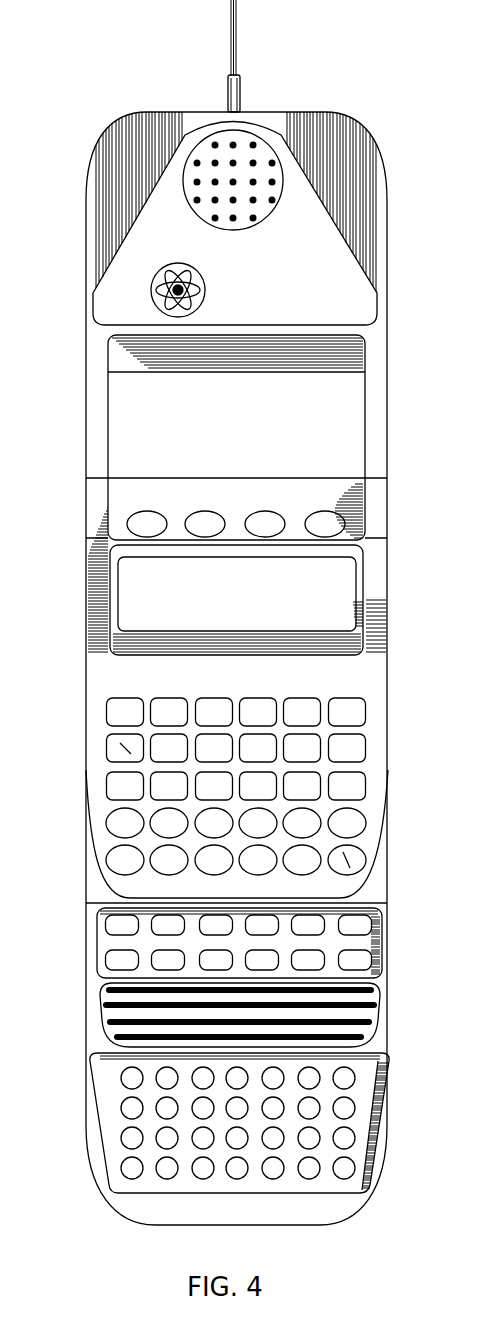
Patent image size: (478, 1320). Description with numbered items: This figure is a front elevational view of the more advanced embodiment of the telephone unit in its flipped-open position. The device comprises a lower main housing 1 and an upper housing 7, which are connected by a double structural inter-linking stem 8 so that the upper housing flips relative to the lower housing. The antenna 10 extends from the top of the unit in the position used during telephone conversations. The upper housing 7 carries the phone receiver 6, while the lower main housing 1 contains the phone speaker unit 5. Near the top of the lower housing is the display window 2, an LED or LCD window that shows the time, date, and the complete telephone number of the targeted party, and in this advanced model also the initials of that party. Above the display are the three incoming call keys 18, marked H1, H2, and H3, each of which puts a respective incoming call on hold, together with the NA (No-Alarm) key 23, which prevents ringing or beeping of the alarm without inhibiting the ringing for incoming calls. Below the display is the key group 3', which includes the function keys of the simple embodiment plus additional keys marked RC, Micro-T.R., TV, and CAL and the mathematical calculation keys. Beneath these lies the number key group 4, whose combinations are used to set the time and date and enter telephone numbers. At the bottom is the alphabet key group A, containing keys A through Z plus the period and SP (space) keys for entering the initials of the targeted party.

The lower main housing 1 is at (365, 673).
The display window 2 is at (348, 578).
The function key group 3' is at (290, 786).
The number key group 4 is at (378, 915).
The phone speaker unit 5 is at (372, 1013).
The phone receiver 6 is at (257, 155).
The upper housing 7 is at (350, 290).
The structural inter-linking stem 8 is at (95, 418).
The antenna 10 is at (237, 48).
The incoming call keys 18 is at (262, 511).
The NA key 23 is at (323, 511).
The alphabet key group A is at (350, 1066).